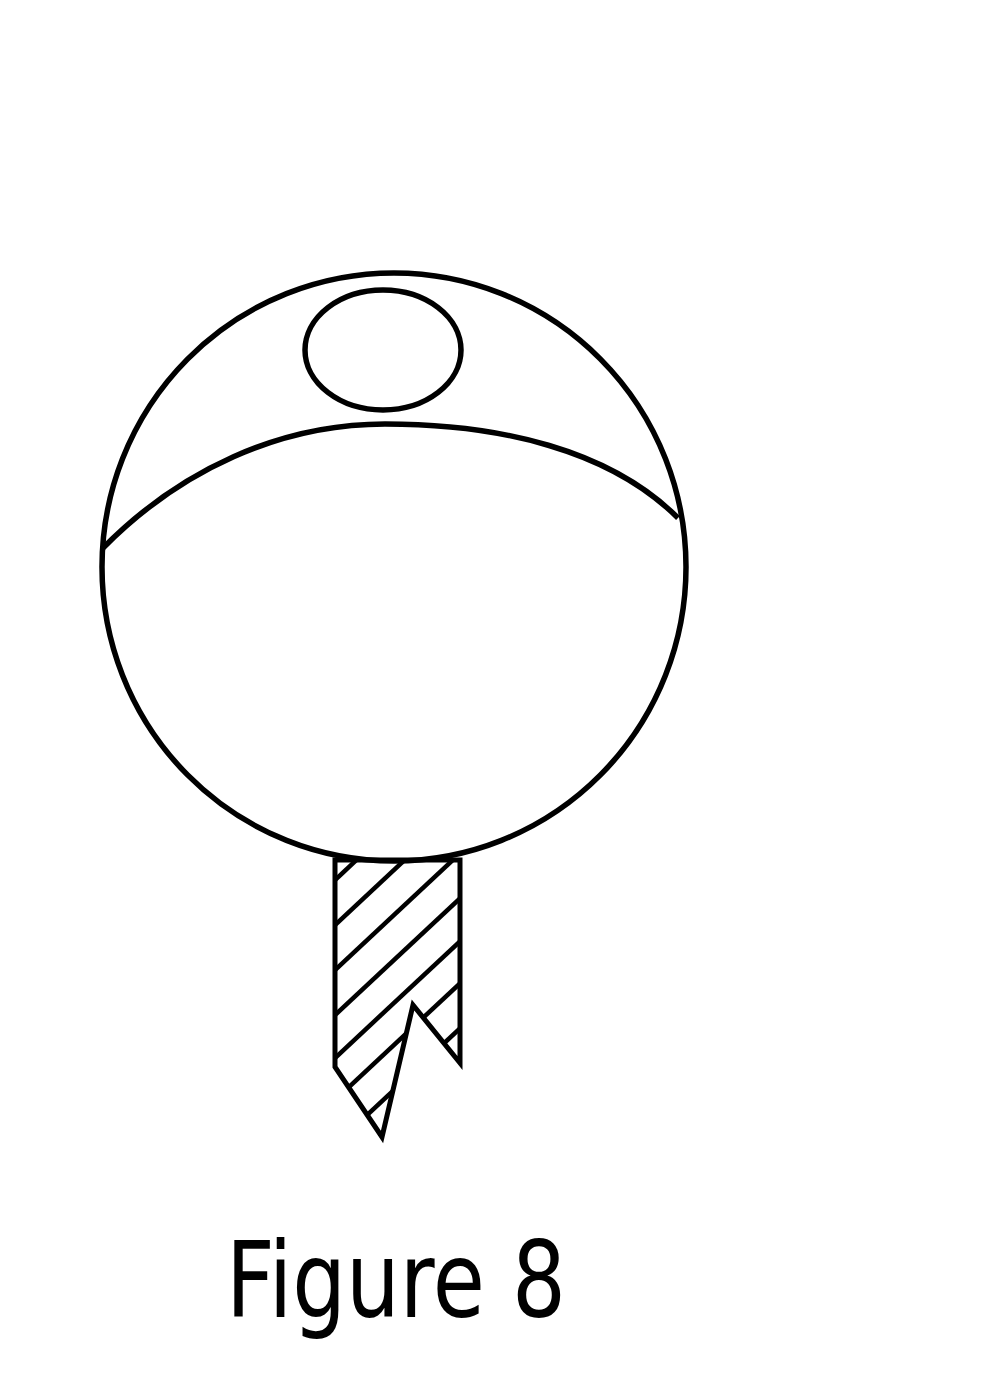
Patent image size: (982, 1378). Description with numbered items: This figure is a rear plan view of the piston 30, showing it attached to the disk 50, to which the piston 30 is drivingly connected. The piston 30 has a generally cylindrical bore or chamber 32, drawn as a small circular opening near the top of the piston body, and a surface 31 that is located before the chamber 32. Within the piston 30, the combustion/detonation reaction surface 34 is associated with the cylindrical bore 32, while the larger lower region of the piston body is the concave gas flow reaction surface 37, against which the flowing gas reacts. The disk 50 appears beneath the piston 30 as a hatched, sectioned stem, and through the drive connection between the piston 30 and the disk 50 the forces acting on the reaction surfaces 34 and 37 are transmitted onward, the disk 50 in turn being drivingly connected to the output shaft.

The piston 30 is at (497, 288).
The surface 31 is at (434, 272).
The cylindrical bore or chamber 32 is at (345, 324).
The combustion/detonation reaction surface 34 is at (380, 316).
The gas flow reaction surface 37 is at (339, 665).
The disk 50 is at (424, 955).